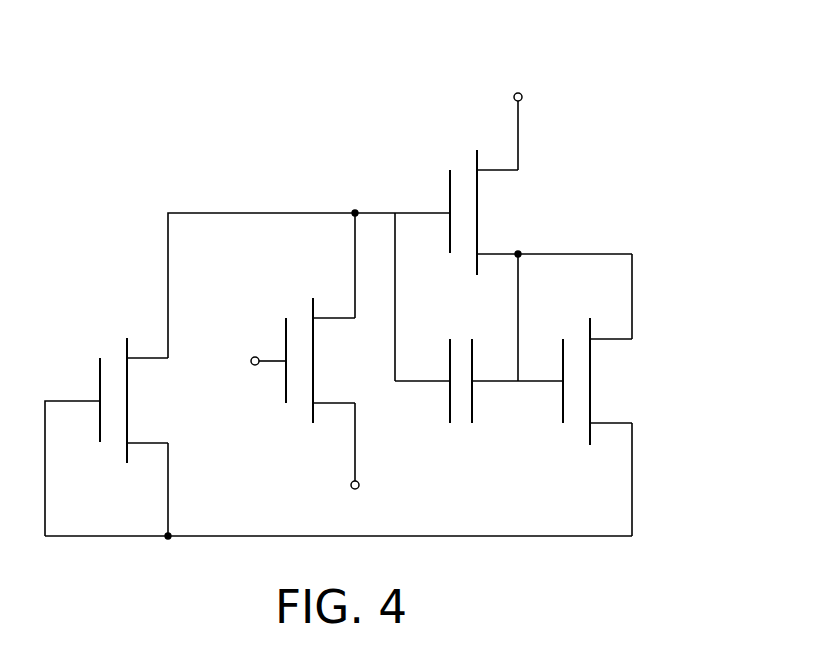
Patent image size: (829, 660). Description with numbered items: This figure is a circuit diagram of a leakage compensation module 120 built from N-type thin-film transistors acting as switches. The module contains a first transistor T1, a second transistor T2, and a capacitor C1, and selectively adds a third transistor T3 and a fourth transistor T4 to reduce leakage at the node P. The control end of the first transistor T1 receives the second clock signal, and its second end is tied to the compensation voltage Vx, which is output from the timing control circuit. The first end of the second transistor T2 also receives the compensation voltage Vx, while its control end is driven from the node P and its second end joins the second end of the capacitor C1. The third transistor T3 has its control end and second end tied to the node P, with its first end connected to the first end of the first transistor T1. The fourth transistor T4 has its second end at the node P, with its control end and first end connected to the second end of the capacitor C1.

The leakage compensation module 120 is at (726, 44).
The first transistor T1 is at (310, 363).
The second transistor T2 is at (487, 214).
The third transistor T3 is at (137, 401).
The fourth transistor T4 is at (600, 385).
The capacitor C1 is at (461, 398).